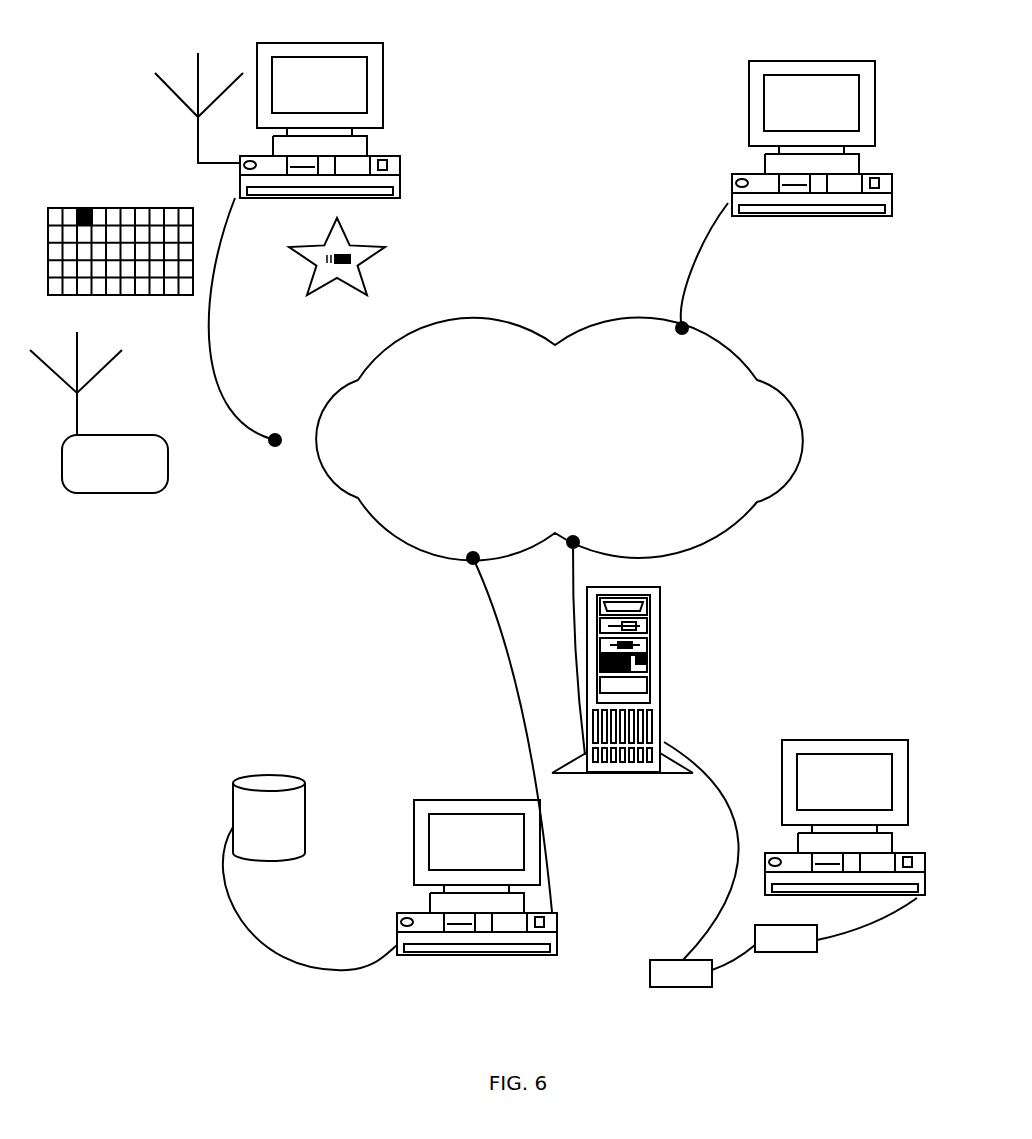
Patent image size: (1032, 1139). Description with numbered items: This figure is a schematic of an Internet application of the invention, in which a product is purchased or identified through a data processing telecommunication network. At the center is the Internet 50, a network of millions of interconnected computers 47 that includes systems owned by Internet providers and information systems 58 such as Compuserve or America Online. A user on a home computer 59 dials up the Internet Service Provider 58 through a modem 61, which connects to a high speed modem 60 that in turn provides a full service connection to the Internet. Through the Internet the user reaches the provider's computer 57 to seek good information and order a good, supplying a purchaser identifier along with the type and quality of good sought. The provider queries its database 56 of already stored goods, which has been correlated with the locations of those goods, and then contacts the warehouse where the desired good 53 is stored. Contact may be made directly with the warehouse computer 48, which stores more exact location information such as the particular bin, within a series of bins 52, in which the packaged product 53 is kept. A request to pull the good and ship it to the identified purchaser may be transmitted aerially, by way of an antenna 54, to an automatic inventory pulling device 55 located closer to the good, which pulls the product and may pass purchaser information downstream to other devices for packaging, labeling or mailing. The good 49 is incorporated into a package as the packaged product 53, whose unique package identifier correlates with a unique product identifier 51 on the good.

The interconnected computers 47 is at (894, 205).
The warehouse computer 48 is at (405, 162).
The good 49 is at (378, 275).
The Internet 50 is at (525, 312).
The unique product identifier 51 is at (342, 272).
The series of bins 52 is at (120, 264).
The desired good 53 is at (93, 207).
The antenna 54 is at (191, 146).
The automatic inventory pulling device 55 is at (116, 497).
The database 56 is at (310, 788).
The provider's computer 57 is at (561, 926).
The Internet Service Provider 58 is at (666, 728).
The home computer 59 is at (763, 848).
The high speed modem 60 is at (683, 992).
The modem 61 is at (789, 957).